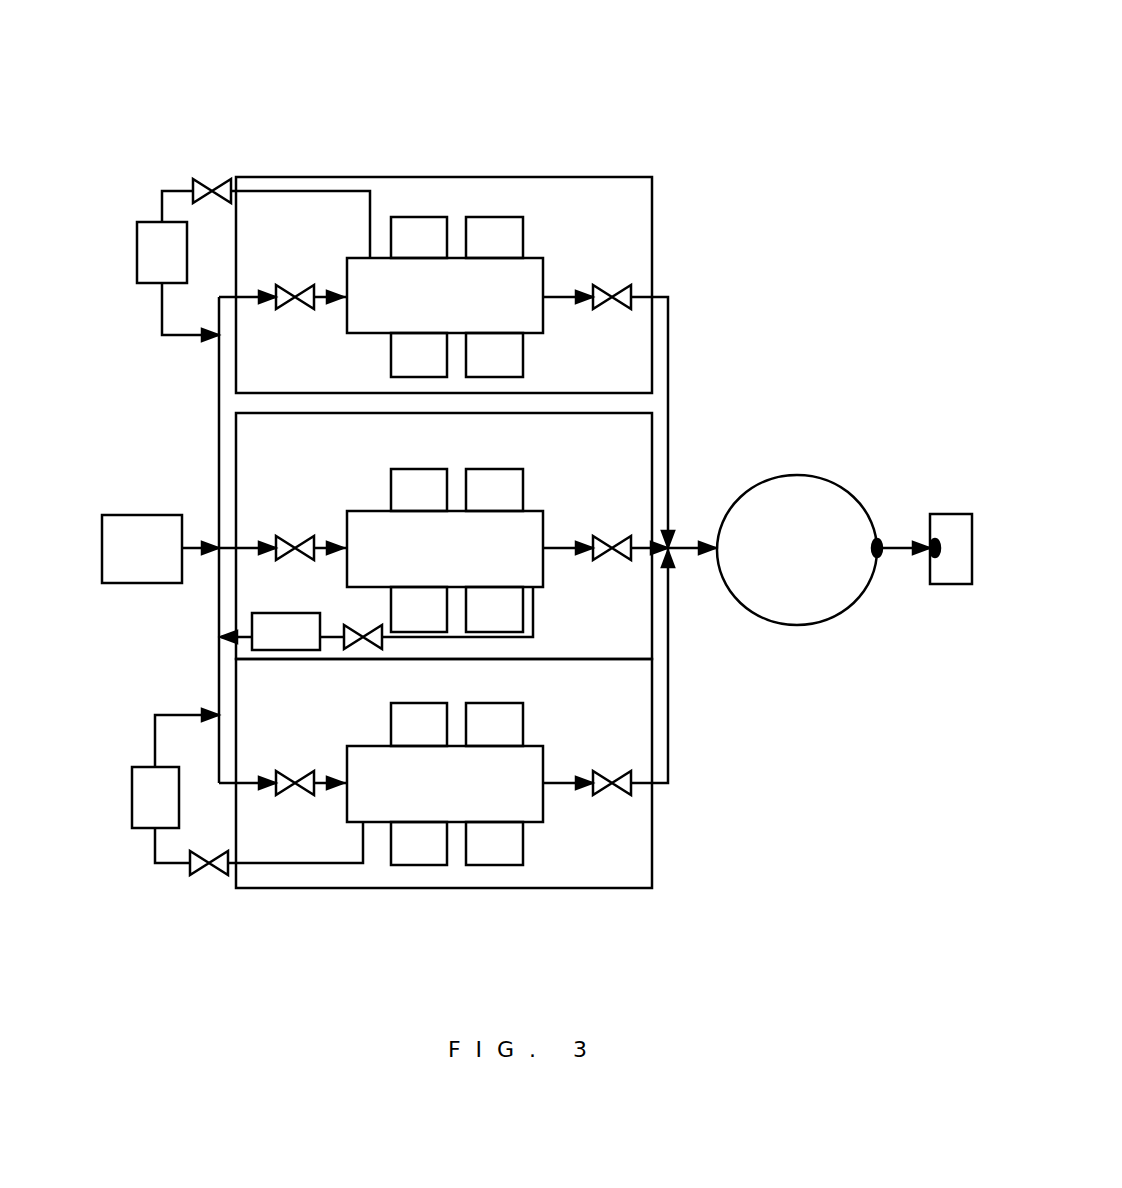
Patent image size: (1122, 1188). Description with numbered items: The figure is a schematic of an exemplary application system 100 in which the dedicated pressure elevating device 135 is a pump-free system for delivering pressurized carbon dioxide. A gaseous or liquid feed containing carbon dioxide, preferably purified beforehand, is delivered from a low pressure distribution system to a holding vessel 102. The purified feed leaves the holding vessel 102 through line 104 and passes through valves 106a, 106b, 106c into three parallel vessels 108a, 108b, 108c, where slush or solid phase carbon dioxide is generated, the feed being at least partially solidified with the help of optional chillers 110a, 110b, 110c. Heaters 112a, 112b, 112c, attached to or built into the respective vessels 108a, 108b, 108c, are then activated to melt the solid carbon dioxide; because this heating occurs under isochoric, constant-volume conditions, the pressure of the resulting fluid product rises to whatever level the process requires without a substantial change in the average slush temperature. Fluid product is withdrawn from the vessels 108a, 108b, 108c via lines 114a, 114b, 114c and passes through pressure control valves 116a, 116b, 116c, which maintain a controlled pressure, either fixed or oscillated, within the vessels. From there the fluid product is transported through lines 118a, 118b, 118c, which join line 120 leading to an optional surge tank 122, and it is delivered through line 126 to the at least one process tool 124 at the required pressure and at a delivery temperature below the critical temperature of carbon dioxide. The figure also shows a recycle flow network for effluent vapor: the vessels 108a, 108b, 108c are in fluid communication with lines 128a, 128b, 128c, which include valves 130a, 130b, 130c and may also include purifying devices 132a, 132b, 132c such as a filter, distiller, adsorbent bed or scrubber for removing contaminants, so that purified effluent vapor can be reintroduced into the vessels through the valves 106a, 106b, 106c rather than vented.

The application system 100 is at (694, 70).
The holding vessel 102 is at (123, 583).
The line 104 is at (187, 548).
The valve 106a is at (298, 796).
The valve 106b is at (290, 560).
The valve 106c is at (297, 309).
The vessel 108a is at (347, 746).
The vessel 108b is at (347, 511).
The vessel 108c is at (347, 258).
The chiller 110a is at (388, 712).
The chiller 110b is at (417, 470).
The chiller 110c is at (420, 216).
The heater 112a is at (513, 852).
The heater 112b is at (510, 487).
The heater 112c is at (510, 243).
The line 114a is at (557, 783).
The line 114b is at (560, 547).
The line 114c is at (563, 295).
The pressure control valve 116a is at (607, 796).
The pressure control valve 116b is at (610, 562).
The pressure control valve 116c is at (620, 309).
The line 118a is at (668, 745).
The line 118b is at (640, 547).
The line 118c is at (668, 368).
The line 120 is at (683, 552).
The surge tank 122 is at (807, 625).
The process tool 124 is at (950, 585).
The line 126 is at (898, 548).
The line 128a is at (153, 850).
The line 128b is at (533, 613).
The line 128c is at (162, 208).
The valve 130a is at (207, 876).
The valve 130b is at (362, 650).
The valve 130c is at (222, 187).
The purifying device 132a is at (130, 795).
The purifying device 132b is at (272, 613).
The purifying device 132c is at (150, 283).
The dedicated pressure elevating device 135 is at (510, 192).